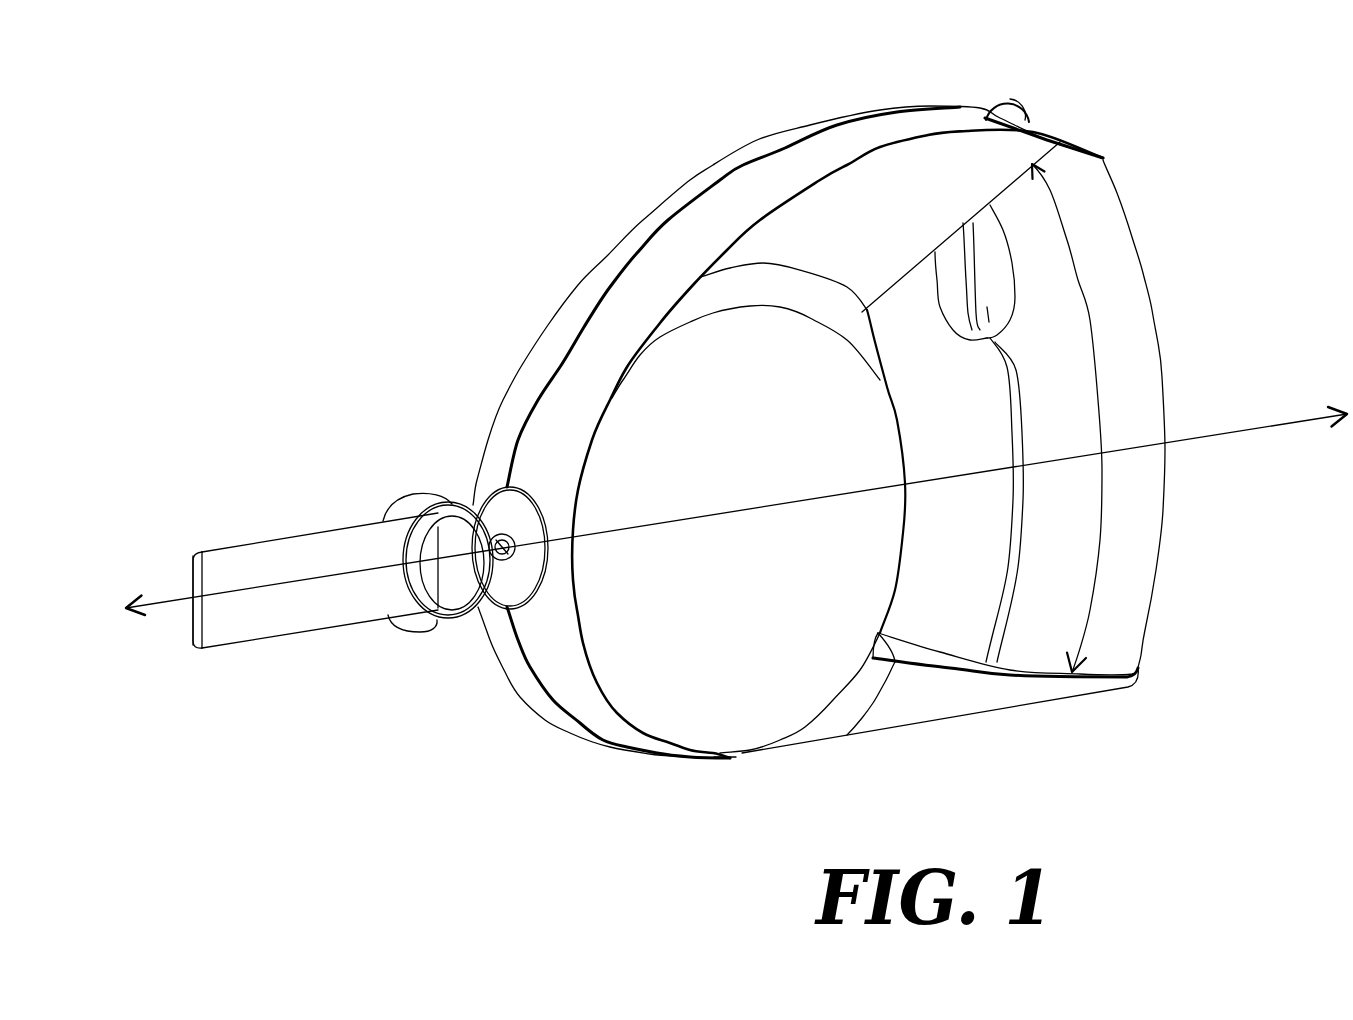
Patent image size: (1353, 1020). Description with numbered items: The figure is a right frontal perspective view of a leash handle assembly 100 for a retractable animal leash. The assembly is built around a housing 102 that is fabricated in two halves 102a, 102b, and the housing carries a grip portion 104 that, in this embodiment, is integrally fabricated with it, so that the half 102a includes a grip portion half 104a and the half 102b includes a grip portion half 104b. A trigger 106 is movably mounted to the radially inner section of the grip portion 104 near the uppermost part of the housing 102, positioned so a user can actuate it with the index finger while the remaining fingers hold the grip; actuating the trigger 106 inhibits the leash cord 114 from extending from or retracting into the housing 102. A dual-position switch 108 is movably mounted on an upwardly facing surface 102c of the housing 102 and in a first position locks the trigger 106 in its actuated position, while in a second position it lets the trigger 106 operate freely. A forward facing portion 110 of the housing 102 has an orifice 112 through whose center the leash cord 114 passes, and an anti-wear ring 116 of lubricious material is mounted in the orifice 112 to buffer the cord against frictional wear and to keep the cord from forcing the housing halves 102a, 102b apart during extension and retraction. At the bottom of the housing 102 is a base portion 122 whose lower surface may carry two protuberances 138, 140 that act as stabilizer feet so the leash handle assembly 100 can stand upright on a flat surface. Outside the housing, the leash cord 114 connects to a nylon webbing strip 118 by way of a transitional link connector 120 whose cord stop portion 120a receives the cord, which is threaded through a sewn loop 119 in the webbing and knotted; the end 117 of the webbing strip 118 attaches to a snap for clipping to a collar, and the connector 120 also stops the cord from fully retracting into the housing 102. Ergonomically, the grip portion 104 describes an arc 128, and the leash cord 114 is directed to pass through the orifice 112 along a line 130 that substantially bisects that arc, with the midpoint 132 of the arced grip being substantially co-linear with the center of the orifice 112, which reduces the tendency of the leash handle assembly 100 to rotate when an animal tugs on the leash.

The leash handle assembly 100 is at (1195, 150).
The housing 102 is at (768, 697).
The housing half 102a is at (652, 218).
The housing half 102b is at (778, 170).
The upwardly facing surface 102c is at (990, 118).
The grip portion 104 is at (1160, 368).
The grip portion half 104a is at (1147, 567).
The grip portion half 104b is at (1010, 547).
The trigger 106 is at (985, 345).
The dual-position switch 108 is at (1010, 108).
The forward facing portion 110 is at (530, 662).
The orifice 112 is at (498, 527).
The leash cord 114 is at (397, 510).
The anti-wear ring 116 is at (498, 507).
The end of the webbing strip 117 is at (195, 557).
The nylon webbing strip 118 is at (248, 613).
The sewn loop 119 is at (298, 547).
The transitional link connector 120 is at (450, 505).
The cord stop portion 120a is at (427, 587).
The base portion 122 is at (930, 700).
The arc 128 is at (1090, 323).
The line 130 is at (733, 513).
The midpoint of the arced grip portion 132 is at (1100, 453).
The protuberance 138 is at (723, 760).
The protuberance 140 is at (977, 715).